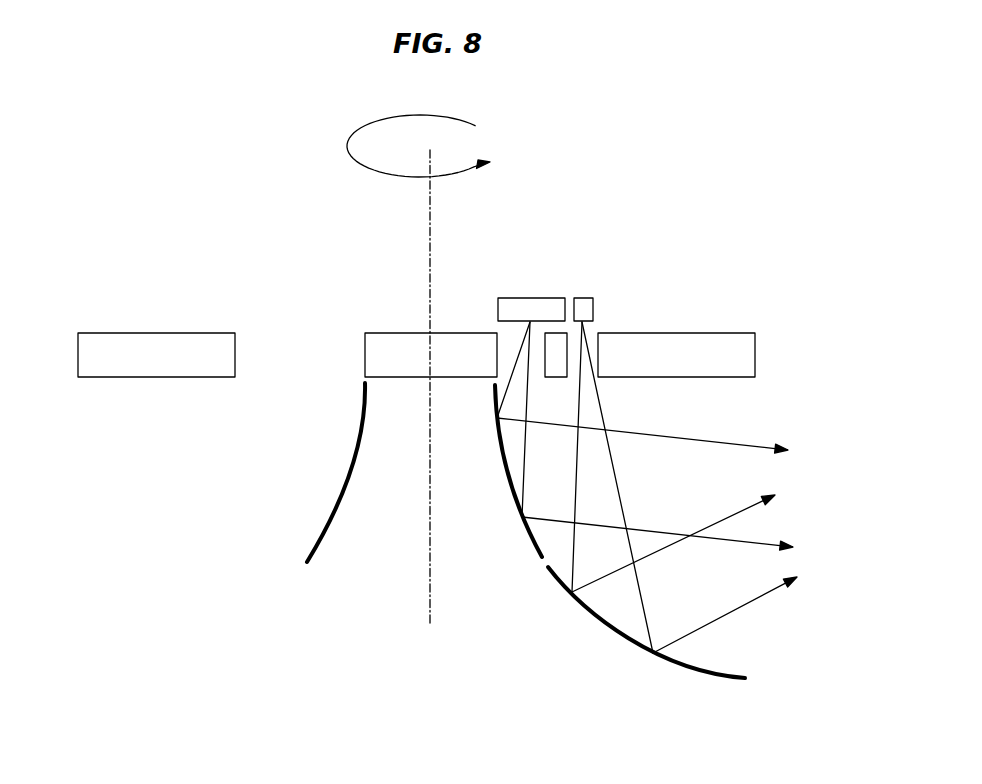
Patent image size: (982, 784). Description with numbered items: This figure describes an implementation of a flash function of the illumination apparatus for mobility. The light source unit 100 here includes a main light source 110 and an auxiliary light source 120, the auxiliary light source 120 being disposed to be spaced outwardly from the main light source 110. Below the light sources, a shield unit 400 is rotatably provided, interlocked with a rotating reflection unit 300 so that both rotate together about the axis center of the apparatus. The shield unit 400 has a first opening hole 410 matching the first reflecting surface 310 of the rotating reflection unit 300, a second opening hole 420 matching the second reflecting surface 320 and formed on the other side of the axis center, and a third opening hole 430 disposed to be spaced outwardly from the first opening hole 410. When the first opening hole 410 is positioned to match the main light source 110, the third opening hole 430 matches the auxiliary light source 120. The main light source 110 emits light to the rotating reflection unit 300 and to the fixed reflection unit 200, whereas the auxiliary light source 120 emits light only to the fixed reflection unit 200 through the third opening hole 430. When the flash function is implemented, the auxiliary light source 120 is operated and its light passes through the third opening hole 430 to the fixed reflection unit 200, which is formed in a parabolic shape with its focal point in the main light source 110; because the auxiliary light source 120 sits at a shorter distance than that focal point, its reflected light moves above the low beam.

The light source unit 100 is at (643, 190).
The main light source 110 is at (525, 298).
The auxiliary light source 120 is at (585, 298).
The fixed reflection unit 200 is at (623, 660).
The rotating reflection unit 300 is at (320, 483).
The first reflecting surface 310 is at (522, 533).
The second reflecting surface 320 is at (318, 543).
The shield unit 400 is at (121, 311).
The first opening hole 410 is at (497, 355).
The second opening hole 420 is at (235, 352).
The third opening hole 430 is at (596, 350).